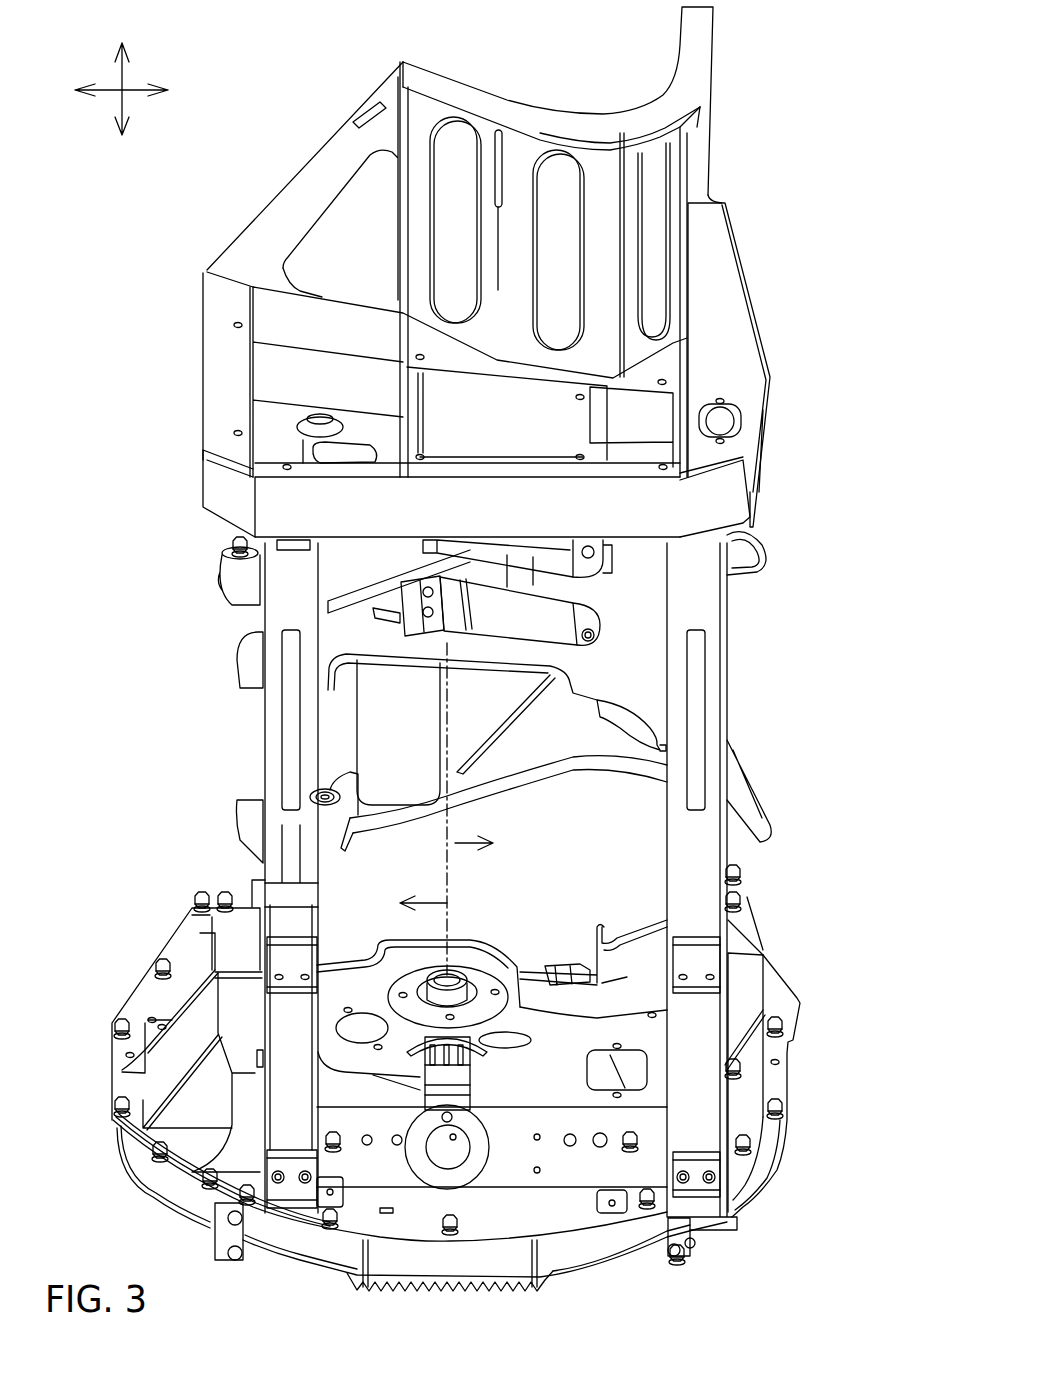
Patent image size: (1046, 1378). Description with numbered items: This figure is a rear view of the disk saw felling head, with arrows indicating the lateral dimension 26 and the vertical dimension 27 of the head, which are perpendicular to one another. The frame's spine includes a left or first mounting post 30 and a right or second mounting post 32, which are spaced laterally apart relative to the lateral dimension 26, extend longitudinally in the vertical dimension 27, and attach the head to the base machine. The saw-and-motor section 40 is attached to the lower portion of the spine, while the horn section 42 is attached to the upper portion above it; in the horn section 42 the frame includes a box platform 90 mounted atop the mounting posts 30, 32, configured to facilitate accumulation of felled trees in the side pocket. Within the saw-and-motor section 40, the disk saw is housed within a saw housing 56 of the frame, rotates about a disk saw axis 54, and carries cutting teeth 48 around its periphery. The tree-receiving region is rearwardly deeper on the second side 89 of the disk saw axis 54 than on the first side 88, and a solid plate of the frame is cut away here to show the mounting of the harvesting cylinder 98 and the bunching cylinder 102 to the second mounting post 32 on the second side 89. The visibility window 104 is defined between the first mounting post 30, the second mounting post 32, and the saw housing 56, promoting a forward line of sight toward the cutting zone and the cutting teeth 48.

The lateral dimension 26 is at (123, 107).
The vertical dimension 27 is at (141, 90).
The first mounting post 30 is at (273, 722).
The second mounting post 32 is at (713, 694).
The saw-and-motor section 40 is at (193, 955).
The horn section 42 is at (740, 172).
The cutting teeth 48 is at (563, 966).
The disk saw axis 54 is at (458, 1143).
The saw housing 56 is at (743, 990).
The first side 88 is at (433, 903).
The second side 89 is at (455, 843).
The box platform 90 is at (730, 313).
The harvesting cylinder 98 is at (530, 608).
The bunching cylinder 102 is at (547, 550).
The visibility window 104 is at (605, 838).